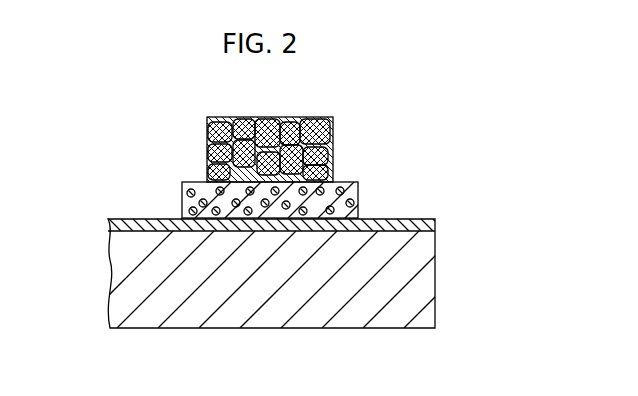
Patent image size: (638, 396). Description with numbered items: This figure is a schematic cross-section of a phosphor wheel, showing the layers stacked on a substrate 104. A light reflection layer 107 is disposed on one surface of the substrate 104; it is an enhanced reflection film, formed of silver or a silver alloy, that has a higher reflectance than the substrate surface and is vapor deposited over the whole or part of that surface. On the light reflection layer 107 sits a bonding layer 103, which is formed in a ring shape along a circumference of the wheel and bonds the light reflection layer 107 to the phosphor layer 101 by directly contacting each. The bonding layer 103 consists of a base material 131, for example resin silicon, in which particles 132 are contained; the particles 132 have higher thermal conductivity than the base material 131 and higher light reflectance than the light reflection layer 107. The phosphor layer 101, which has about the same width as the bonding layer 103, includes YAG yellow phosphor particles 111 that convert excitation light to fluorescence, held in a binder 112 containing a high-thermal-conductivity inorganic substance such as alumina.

The phosphor layer 101 is at (259, 149).
The phosphor particle 111 is at (333, 133).
The binder 112 is at (333, 158).
The bonding layer 103 is at (262, 188).
The base material 131 is at (182, 203).
The particle 132 is at (182, 190).
The light reflection layer 107 is at (423, 226).
The substrate 104 is at (423, 270).